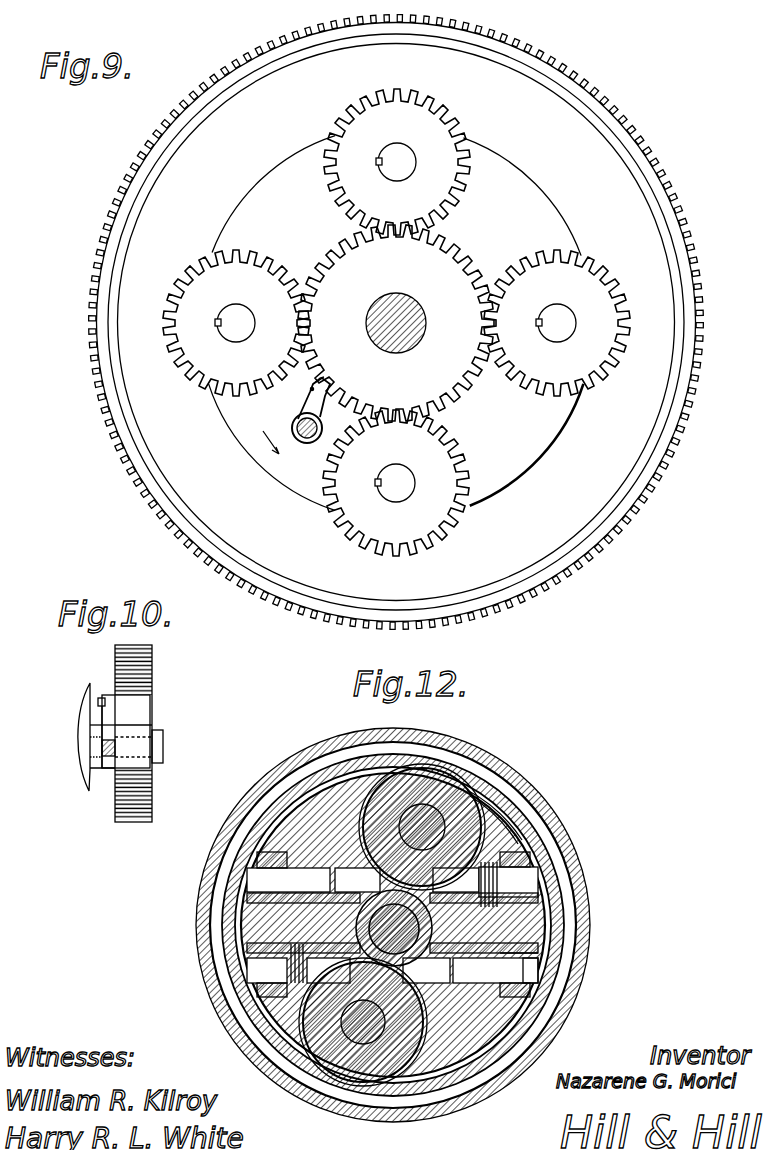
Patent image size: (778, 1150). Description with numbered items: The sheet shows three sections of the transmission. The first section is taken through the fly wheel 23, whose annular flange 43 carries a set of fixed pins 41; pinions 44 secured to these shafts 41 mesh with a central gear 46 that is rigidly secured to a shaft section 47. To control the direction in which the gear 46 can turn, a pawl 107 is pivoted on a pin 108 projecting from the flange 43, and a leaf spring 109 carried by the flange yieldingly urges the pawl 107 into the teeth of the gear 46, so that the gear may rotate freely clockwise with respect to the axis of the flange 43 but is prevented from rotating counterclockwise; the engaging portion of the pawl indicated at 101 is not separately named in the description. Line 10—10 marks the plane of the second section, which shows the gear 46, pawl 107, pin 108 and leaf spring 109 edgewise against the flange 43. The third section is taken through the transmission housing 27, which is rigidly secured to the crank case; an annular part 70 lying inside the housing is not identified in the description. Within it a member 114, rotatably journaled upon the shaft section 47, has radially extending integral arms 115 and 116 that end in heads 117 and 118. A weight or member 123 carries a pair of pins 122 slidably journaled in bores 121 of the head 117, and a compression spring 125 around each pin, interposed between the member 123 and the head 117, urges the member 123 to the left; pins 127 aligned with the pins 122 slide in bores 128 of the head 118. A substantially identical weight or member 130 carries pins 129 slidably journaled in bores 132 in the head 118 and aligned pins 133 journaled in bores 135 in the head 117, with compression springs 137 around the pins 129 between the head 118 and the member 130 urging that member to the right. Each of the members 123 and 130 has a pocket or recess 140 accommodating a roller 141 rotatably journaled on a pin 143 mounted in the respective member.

In FIG. 9, the fly wheel 23 is at (678, 224).
In FIG. 9, the pins 41 is at (398, 152).
In FIG. 9, the annular flange 43 is at (548, 438).
In FIG. 10, the annular flange 43 is at (86, 720).
In FIG. 9, the pinions 44 is at (466, 199).
In FIG. 9, the gear 46 is at (442, 262).
In FIG. 10, the gear 46 is at (140, 673).
In FIG. 9, the shaft section 47 is at (394, 300).
In FIG. 12, the shaft section 47 is at (432, 898).
In FIG. 9, the pawl tooth 101 is at (316, 388).
In FIG. 9, the pawl 107 is at (300, 400).
In FIG. 10, the pawl 107 is at (142, 712).
In FIG. 9, the pin 108 is at (293, 424).
In FIG. 10, the pin 108 is at (163, 747).
In FIG. 10, the leaf spring 109 is at (108, 702).
In FIG. 9, the section line 10 is at (262, 442).
In FIG. 12, the transmission housing 27 is at (331, 742).
In FIG. 12, the inner ring 70 is at (300, 786).
In FIG. 12, the member 114 is at (427, 952).
In FIG. 12, the arm 115 is at (495, 970).
In FIG. 12, the arm 116 is at (338, 910).
In FIG. 12, the head 117 is at (532, 921).
In FIG. 12, the head 118 is at (263, 913).
In FIG. 12, the bores 121 is at (536, 854).
In FIG. 12, the pins 122 is at (530, 882).
In FIG. 12, the weight or member 123 is at (490, 814).
In FIG. 12, the compression spring 125 is at (518, 840).
In FIG. 12, the pins 127 is at (266, 877).
In FIG. 12, the bores 128 is at (262, 858).
In FIG. 12, the pins 129 is at (262, 961).
In FIG. 12, the weight or member 130 is at (506, 1012).
In FIG. 12, the bores 132 is at (264, 992).
In FIG. 12, the pins 133 is at (528, 972).
In FIG. 12, the bores 135 is at (524, 950).
In FIG. 12, the compression springs 137 is at (303, 969).
In FIG. 12, the pocket or recess 140 is at (475, 795).
In FIG. 12, the roller 141 is at (431, 775).
In FIG. 12, the pin 143 is at (412, 817).